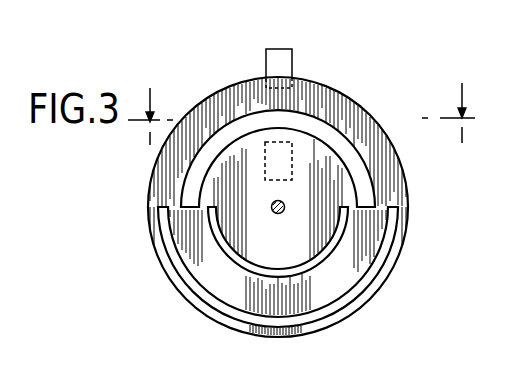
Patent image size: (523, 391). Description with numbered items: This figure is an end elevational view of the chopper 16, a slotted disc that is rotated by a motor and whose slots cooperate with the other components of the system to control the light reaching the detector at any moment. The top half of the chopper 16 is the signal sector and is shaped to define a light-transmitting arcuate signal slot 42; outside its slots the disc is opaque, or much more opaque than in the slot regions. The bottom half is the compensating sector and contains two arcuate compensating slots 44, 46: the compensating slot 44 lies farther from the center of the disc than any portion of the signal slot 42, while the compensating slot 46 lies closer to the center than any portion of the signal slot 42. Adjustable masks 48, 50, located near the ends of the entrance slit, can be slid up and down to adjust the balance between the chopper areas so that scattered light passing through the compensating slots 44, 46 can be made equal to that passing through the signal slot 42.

The chopper 16 is at (347, 117).
The signal slot 42 is at (360, 175).
The compensating slot 44 is at (360, 290).
The compensating slot 46 is at (224, 246).
The adjustable mask 48 is at (283, 62).
The adjustable mask 50 is at (270, 153).